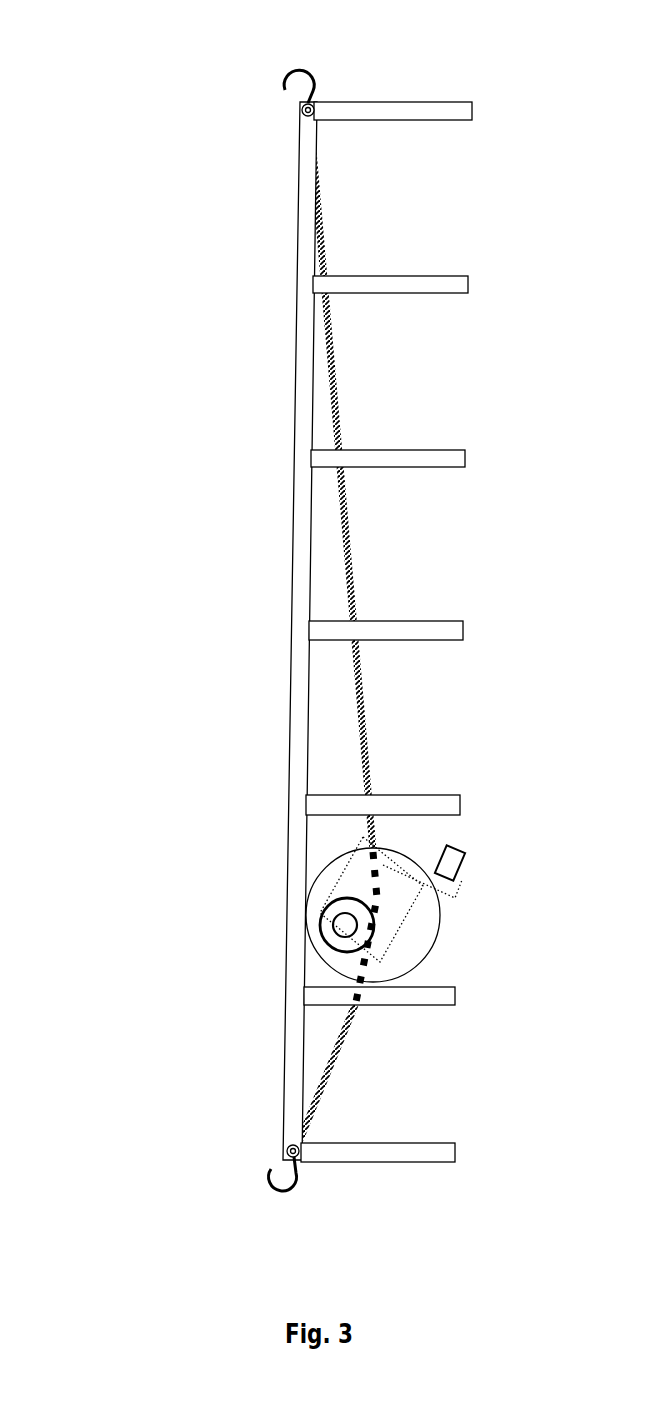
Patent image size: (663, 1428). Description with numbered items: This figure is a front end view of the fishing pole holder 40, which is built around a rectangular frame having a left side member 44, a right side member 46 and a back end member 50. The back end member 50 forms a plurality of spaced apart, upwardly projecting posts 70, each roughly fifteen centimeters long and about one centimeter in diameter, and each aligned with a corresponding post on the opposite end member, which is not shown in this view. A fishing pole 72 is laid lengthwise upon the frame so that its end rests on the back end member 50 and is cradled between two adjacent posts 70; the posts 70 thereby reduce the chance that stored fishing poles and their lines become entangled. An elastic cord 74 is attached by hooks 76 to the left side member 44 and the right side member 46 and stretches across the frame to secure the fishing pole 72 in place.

The fishing pole holder 40 is at (62, 614).
The left side member 44 is at (298, 111).
The right side member 46 is at (287, 1151).
The back end member 50 is at (298, 198).
The posts 70 is at (443, 102).
The fishing pole 72 is at (442, 906).
The elastic cord 74 is at (364, 712).
The hooks 76 is at (291, 70).